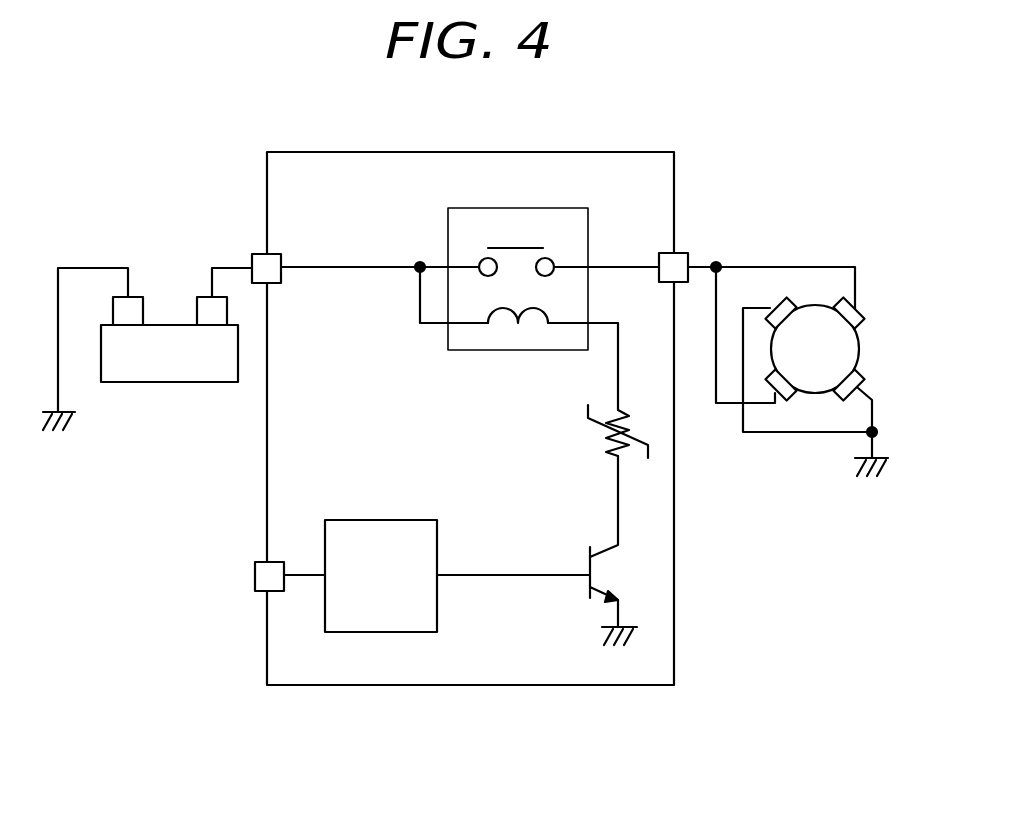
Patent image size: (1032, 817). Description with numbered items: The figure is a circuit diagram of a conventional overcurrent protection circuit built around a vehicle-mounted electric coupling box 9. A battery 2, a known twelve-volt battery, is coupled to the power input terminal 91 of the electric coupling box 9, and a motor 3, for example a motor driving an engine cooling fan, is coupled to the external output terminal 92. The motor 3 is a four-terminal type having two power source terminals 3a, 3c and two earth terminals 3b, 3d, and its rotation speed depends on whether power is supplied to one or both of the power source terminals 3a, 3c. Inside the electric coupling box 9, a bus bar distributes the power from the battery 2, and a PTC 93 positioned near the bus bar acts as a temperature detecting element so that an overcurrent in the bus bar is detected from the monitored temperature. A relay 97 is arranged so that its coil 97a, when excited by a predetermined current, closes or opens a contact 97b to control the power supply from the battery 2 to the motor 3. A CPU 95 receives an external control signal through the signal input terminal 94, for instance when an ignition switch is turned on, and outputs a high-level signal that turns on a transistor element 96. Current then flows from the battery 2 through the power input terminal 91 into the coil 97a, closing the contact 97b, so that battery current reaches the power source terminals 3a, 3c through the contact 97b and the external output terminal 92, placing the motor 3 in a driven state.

The battery 2 is at (167, 383).
The motor 3 is at (811, 348).
The power source terminal 3a is at (860, 300).
The earth terminal 3b is at (790, 297).
The power source terminal 3c is at (787, 398).
The earth terminal 3d is at (852, 398).
The electric coupling box 9 is at (615, 150).
The power input terminal 91 is at (257, 252).
The external output terminal 92 is at (686, 251).
The PTC 93 is at (610, 445).
The signal input terminal 94 is at (260, 592).
The CPU 95 is at (358, 520).
The transistor element 96 is at (585, 553).
The relay 97 is at (516, 285).
The coil 97a is at (510, 328).
The contact 97b is at (507, 247).